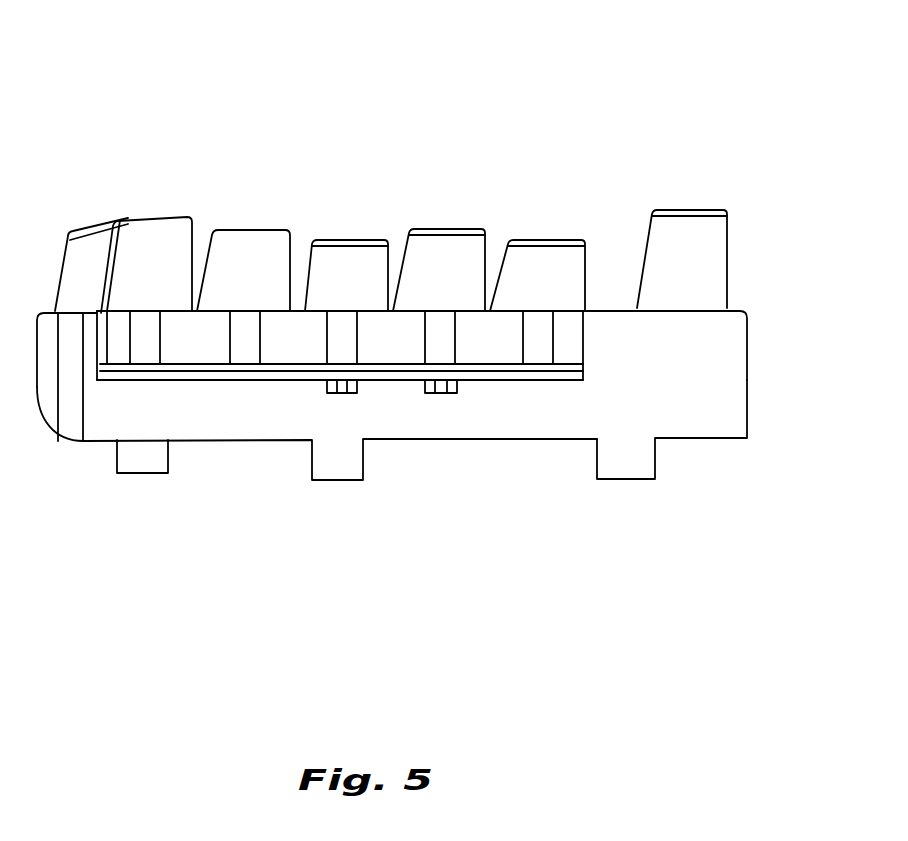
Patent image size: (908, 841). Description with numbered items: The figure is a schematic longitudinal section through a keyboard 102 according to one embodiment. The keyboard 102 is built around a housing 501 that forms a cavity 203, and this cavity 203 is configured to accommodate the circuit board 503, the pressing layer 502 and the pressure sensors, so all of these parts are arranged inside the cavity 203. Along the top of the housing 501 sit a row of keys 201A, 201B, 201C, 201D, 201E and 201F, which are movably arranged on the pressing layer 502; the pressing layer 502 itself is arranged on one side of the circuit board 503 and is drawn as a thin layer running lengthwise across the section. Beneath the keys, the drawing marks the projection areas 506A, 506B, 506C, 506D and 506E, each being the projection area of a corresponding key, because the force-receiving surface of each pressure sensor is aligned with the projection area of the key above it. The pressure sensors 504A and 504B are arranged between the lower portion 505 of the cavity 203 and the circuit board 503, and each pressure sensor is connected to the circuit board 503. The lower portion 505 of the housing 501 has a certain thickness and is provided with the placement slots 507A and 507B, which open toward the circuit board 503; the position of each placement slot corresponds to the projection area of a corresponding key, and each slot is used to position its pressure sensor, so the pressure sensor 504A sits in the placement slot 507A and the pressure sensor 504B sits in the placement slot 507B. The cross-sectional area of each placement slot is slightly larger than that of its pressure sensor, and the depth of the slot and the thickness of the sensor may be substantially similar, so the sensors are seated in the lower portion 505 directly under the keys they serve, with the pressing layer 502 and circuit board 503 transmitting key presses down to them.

The keyboard 102 is at (735, 331).
The housing 501 is at (462, 395).
The pressing layer 502 is at (384, 464).
The circuit board 503 is at (353, 477).
The pressure sensor 504A is at (290, 436).
The pressure sensor 504B is at (477, 440).
The lower portion 505 is at (340, 535).
The placement slot 507A is at (332, 478).
The placement slot 507B is at (411, 440).
The cavity 203 is at (103, 500).
The key 201A is at (123, 225).
The key 201B is at (237, 224).
The key 201C is at (336, 232).
The key 201D is at (432, 230).
The key 201E is at (565, 233).
The key 201F is at (700, 216).
The projection area 506A is at (166, 196).
The projection area 506B is at (267, 208).
The projection area 506C is at (362, 200).
The projection area 506D is at (462, 200).
The projection area 506E is at (560, 201).